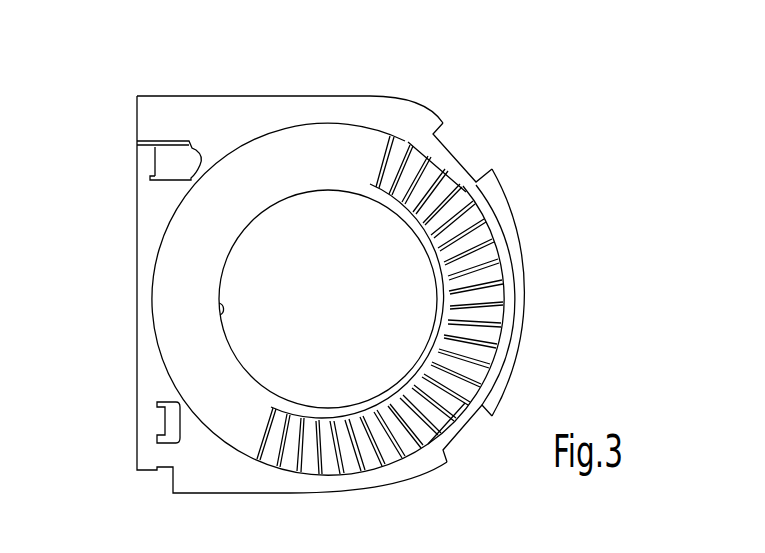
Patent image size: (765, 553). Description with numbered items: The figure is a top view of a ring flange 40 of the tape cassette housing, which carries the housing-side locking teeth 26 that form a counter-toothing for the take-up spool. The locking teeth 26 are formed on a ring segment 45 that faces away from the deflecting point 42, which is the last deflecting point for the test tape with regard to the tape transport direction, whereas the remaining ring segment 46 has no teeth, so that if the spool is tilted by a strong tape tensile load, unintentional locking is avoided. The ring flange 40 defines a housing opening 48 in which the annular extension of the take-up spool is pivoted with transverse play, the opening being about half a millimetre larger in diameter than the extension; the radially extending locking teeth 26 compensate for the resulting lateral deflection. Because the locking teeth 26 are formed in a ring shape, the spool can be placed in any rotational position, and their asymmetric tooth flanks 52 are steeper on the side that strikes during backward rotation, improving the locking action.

The locking teeth 26 is at (493, 288).
The ring flange 40 is at (407, 142).
The deflecting point 42 is at (192, 142).
The ring segment 45 is at (512, 366).
The remaining ring segment 46 is at (173, 282).
The housing opening 48 is at (222, 311).
The tooth flank 52 is at (497, 187).